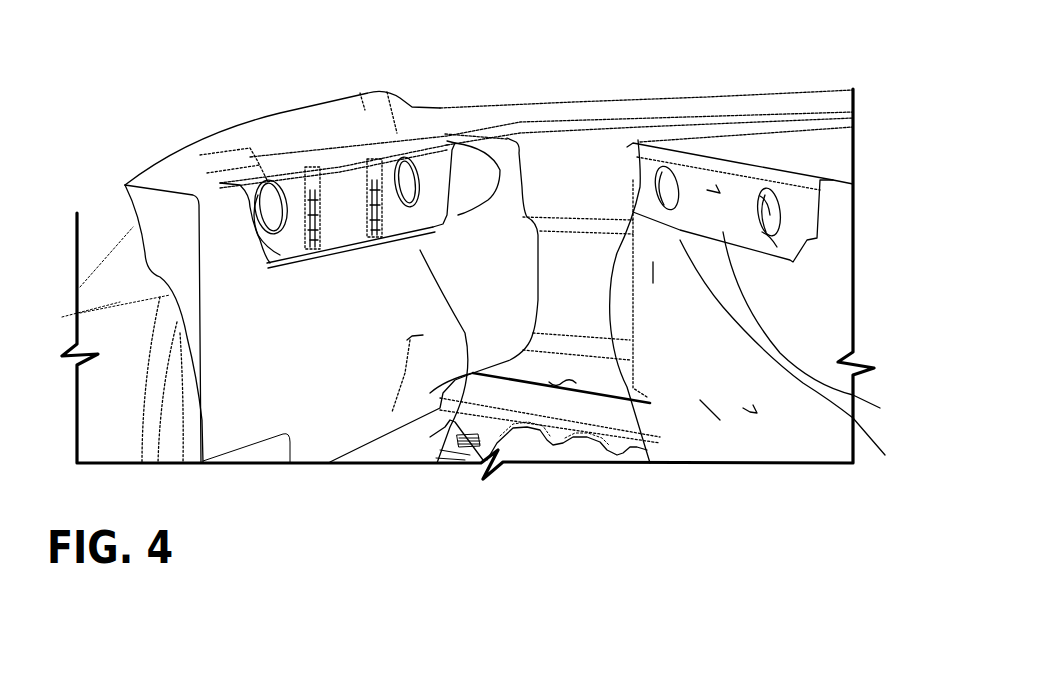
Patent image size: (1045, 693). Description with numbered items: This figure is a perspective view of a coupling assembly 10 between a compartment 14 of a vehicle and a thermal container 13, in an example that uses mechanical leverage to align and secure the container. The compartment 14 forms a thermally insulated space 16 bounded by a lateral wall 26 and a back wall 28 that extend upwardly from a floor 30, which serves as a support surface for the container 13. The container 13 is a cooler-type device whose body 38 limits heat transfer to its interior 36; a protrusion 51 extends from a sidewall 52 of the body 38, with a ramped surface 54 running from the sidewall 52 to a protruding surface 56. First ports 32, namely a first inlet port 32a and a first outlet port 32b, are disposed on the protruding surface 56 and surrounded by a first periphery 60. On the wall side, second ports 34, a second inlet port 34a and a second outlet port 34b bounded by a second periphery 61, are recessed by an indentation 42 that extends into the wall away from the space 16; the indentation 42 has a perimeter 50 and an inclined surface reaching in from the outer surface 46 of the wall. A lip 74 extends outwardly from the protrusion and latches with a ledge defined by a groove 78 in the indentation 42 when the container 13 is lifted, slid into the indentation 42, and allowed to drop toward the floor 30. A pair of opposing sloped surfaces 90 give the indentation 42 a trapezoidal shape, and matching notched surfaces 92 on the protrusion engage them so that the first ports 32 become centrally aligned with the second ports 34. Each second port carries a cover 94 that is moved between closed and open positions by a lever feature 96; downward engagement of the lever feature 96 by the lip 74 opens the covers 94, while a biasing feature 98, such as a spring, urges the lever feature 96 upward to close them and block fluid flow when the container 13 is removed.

The coupling assembly 10 is at (602, 83).
The thermal container 13 is at (780, 148).
The compartment 14 is at (368, 93).
The thermally insulated space 16 is at (495, 300).
The lateral wall 26 is at (213, 285).
The back wall 28 is at (597, 150).
The floor 30 is at (567, 463).
The first ports 32 is at (800, 303).
The first inlet port 32a is at (770, 207).
The first outlet port 32b is at (660, 165).
The second ports 34 is at (256, 166).
The second inlet port 34a is at (255, 183).
The second outlet port 34b is at (408, 152).
The interior 36 is at (753, 415).
The body 38 is at (638, 140).
The indentation 42 is at (368, 206).
The outer surface 46 is at (407, 207).
The perimeter 50 is at (265, 244).
The protrusion 51 is at (677, 243).
The sidewall 52 is at (720, 420).
The ramped surface 54 is at (830, 277).
The protruding surface 56 is at (709, 188).
The first periphery 60 is at (780, 207).
The second periphery 61 is at (287, 242).
The lip 74 is at (814, 331).
The groove 78 is at (433, 213).
The sloped surfaces 90 is at (490, 175).
The notched surfaces 92 is at (780, 210).
The cover 94 is at (269, 173).
The lever feature 96 is at (359, 238).
The biasing feature 98 is at (322, 205).